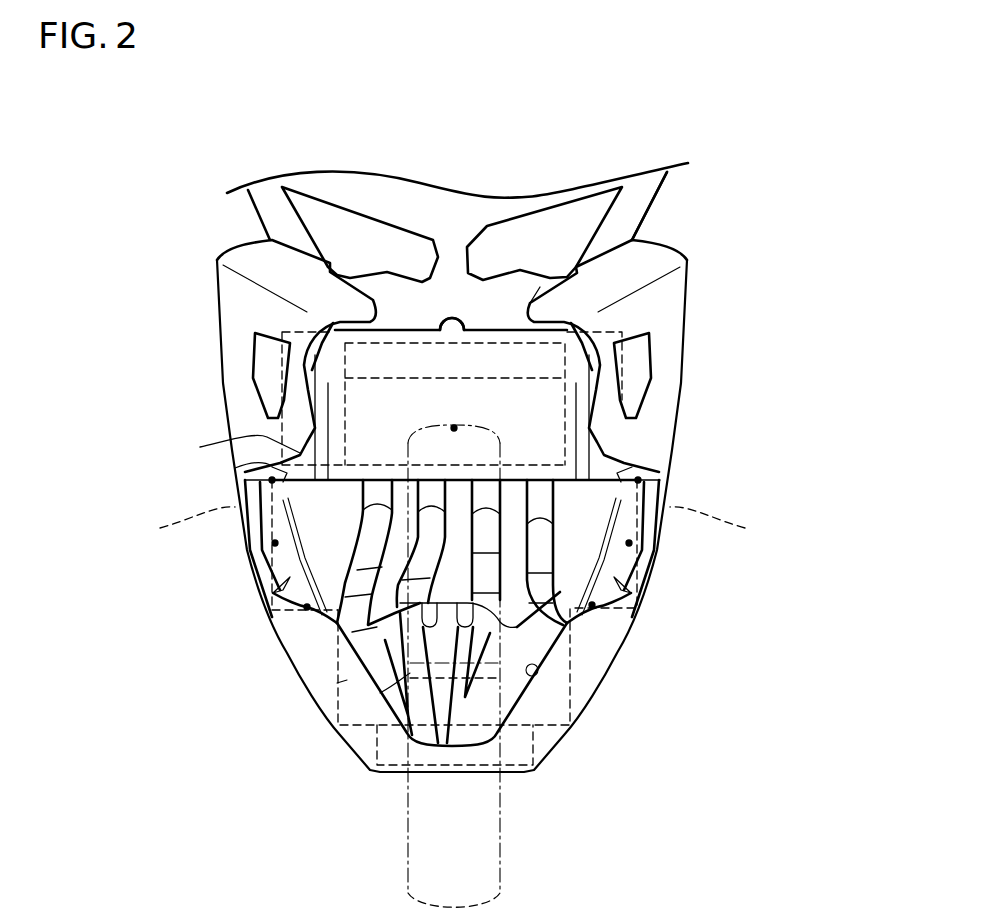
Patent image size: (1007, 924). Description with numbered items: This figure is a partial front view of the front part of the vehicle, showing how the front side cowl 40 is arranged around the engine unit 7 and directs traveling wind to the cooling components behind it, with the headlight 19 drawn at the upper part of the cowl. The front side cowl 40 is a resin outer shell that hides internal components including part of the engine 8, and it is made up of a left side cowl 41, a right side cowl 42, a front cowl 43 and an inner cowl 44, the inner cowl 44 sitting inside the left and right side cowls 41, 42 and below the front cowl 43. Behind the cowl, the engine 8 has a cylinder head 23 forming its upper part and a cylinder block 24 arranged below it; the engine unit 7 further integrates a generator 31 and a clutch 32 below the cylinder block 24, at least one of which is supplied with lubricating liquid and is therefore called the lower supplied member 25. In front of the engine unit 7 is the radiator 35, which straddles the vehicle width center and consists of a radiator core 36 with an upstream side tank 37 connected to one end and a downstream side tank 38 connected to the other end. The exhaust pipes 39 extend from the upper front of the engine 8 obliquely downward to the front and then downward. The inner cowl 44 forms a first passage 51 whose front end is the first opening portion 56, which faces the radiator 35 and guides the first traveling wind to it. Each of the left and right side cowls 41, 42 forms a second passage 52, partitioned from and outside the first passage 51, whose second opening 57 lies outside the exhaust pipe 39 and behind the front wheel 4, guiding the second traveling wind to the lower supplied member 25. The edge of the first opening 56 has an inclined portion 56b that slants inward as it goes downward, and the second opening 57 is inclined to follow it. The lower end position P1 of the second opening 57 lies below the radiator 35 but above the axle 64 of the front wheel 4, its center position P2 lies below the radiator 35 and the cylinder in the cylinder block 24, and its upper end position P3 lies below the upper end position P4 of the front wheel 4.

The front wheel 4 is at (503, 860).
The engine unit 7 is at (572, 670).
The engine 8 is at (340, 683).
The headlight 19 is at (347, 210).
The cylinder head 23 is at (540, 287).
The cylinder block 24 is at (600, 435).
The lower supplied member 25 is at (455, 548).
The generator 31 is at (682, 548).
The clutch 32 is at (225, 548).
The radiator 35 is at (453, 327).
The radiator core 36 is at (387, 340).
The upstream side tank 37 is at (618, 393).
The downstream side tank 38 is at (295, 393).
The exhaust pipe 39 is at (388, 672).
The front side cowl 40 is at (205, 240).
The left side cowl 41 is at (675, 338).
The right side cowl 42 is at (225, 327).
The front cowl 43 is at (643, 195).
The inner cowl 44 is at (277, 437).
The first passage 51 is at (477, 723).
The second passage 52 is at (441, 646).
The first opening portion 56 is at (527, 655).
The inclined portion 56b is at (515, 687).
The second opening 57 is at (280, 587).
The axle 64 is at (423, 660).
The lower end position P1 is at (277, 637).
The center position P2 is at (275, 543).
The upper end position P3 is at (243, 478).
The upper end position P4 is at (454, 428).